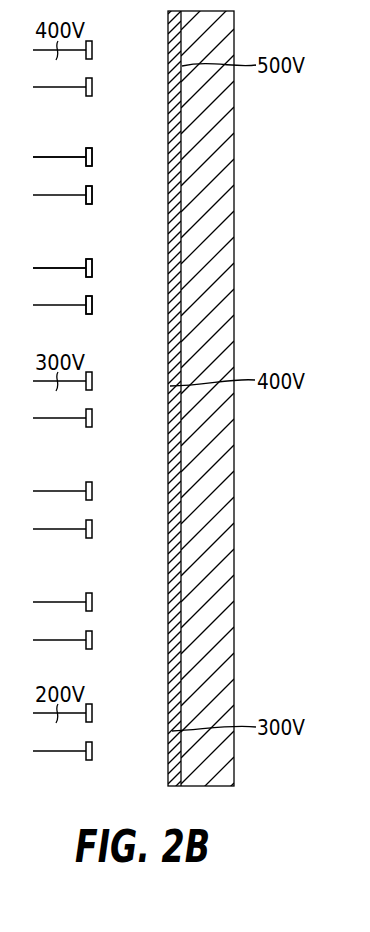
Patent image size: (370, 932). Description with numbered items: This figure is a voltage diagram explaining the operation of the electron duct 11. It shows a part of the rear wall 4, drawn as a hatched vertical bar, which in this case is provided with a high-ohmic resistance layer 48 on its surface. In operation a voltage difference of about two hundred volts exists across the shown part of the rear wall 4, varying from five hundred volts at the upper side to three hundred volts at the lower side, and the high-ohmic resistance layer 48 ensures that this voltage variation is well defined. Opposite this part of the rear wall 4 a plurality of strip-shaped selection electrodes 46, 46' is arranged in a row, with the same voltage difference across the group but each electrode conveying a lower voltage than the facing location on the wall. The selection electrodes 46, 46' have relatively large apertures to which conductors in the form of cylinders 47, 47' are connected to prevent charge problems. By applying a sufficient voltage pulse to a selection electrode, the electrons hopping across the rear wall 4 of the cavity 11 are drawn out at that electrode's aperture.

The rear wall 4 is at (205, 181).
The electron duct 11 is at (135, 470).
The high-ohmic resistance layer 48 is at (170, 40).
The selection electrode 46 is at (108, 286).
The selection electrode 46' is at (113, 176).
The cylinder 47 is at (59, 250).
The cylinder 47' is at (59, 139).